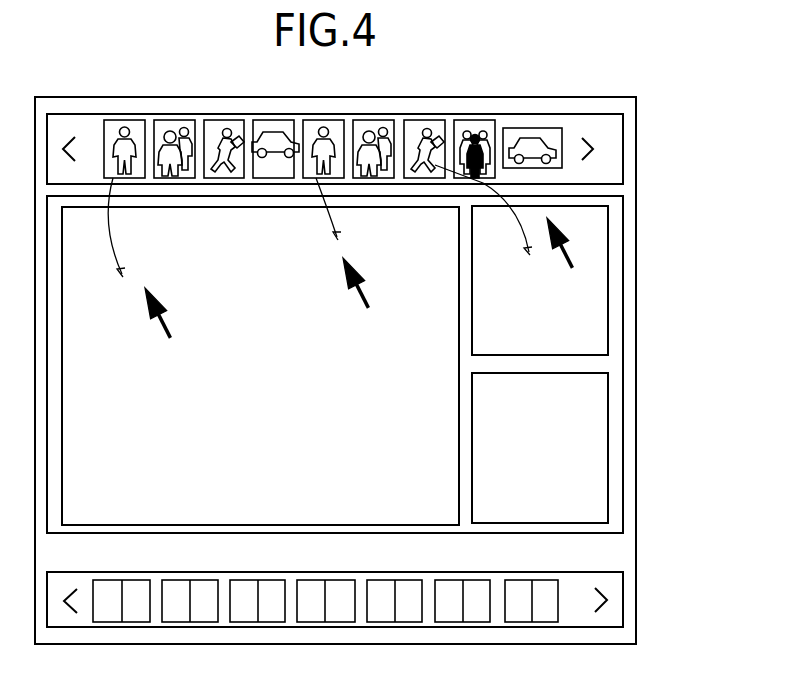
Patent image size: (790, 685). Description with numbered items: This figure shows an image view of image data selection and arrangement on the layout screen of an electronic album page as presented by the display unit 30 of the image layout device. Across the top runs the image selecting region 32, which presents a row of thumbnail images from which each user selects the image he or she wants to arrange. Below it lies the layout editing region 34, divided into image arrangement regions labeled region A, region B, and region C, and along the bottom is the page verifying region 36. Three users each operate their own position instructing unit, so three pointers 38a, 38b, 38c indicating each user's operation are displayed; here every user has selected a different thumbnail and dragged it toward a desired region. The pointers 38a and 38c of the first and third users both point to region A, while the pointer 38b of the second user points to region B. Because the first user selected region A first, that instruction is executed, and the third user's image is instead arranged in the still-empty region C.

The display unit 30 is at (678, 78).
The image selecting region 32 is at (623, 148).
The layout editing region 34 is at (623, 362).
The page verifying region 36 is at (623, 597).
The pointer 38a is at (145, 311).
The pointer 38b is at (563, 230).
The pointer 38c is at (343, 280).